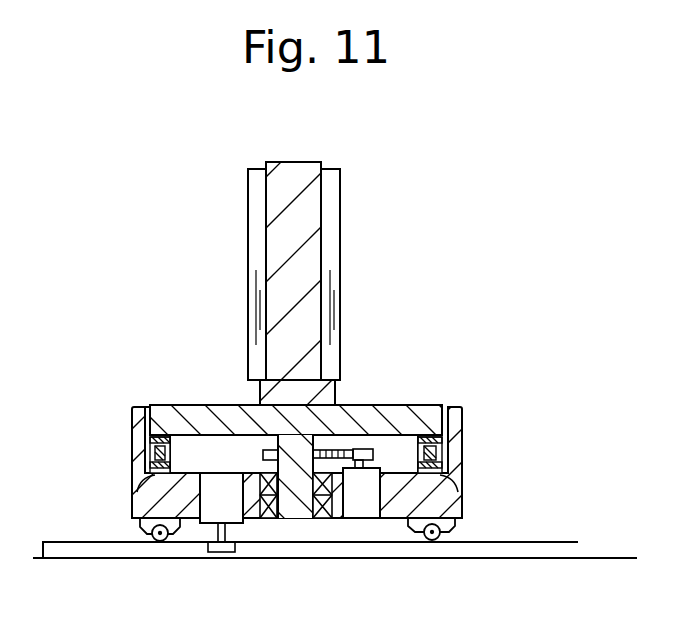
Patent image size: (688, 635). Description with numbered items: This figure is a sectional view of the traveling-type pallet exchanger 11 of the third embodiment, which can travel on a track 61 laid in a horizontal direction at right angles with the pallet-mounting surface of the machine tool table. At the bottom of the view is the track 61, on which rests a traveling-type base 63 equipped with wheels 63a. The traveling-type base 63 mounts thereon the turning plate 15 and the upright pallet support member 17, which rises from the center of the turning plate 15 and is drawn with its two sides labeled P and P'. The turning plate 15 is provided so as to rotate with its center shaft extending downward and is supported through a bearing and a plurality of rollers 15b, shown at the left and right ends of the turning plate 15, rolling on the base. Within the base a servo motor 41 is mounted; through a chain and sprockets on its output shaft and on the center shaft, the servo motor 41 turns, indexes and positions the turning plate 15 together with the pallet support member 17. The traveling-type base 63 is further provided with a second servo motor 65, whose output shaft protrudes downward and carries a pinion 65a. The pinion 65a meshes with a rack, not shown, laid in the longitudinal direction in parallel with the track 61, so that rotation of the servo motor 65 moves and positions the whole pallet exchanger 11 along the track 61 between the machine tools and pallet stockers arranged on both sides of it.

The pallet exchanger 11 is at (440, 185).
The pallet support member 17 is at (293, 177).
The plate P is at (355, 274).
The plate P' is at (228, 274).
The turning plate 15 is at (378, 413).
The rollers 15b is at (155, 473).
The servo motor 41 is at (368, 505).
The track 61 is at (548, 550).
The traveling-type base 63 is at (437, 497).
The wheels 63a is at (437, 538).
The servo motor 65 is at (233, 513).
The pinion 65a is at (223, 552).